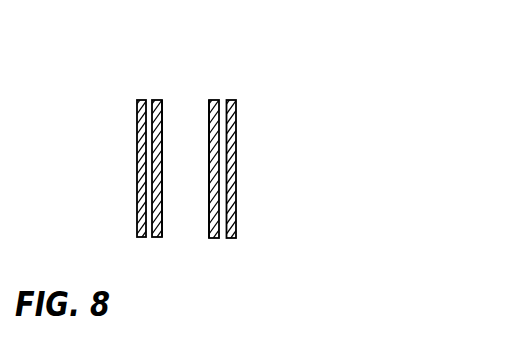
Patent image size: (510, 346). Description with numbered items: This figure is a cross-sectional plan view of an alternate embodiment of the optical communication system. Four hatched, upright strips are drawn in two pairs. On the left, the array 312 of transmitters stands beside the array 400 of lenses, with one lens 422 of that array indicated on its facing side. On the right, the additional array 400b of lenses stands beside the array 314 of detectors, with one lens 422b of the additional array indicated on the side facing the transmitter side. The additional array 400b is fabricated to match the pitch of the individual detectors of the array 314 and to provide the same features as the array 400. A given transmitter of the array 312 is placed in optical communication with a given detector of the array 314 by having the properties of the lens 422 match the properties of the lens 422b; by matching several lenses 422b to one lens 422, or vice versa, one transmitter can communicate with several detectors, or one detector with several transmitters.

The array of transmitters 312 is at (138, 234).
The array of lenses 400 is at (157, 237).
The lens 422 is at (162, 230).
The additional array of lenses 400b is at (214, 100).
The lens 422b is at (209, 108).
The array of detectors 314 is at (235, 102).